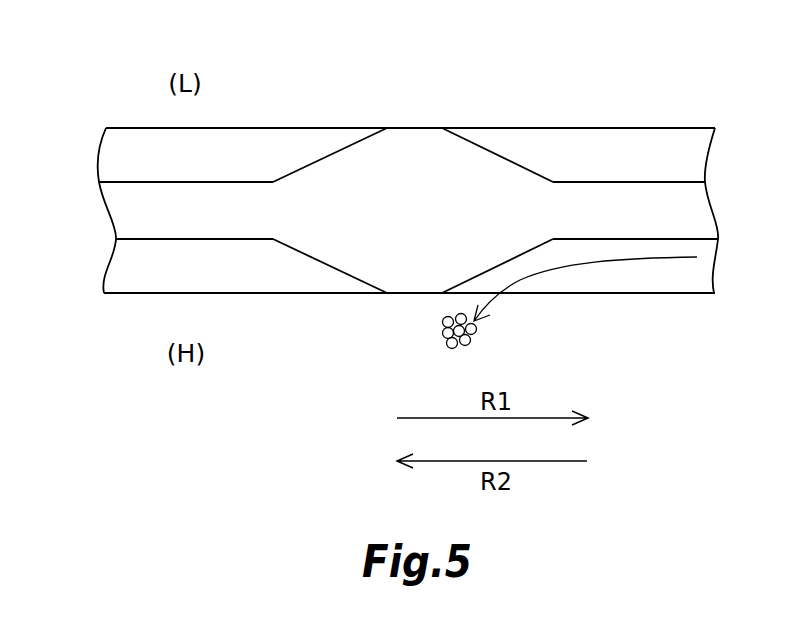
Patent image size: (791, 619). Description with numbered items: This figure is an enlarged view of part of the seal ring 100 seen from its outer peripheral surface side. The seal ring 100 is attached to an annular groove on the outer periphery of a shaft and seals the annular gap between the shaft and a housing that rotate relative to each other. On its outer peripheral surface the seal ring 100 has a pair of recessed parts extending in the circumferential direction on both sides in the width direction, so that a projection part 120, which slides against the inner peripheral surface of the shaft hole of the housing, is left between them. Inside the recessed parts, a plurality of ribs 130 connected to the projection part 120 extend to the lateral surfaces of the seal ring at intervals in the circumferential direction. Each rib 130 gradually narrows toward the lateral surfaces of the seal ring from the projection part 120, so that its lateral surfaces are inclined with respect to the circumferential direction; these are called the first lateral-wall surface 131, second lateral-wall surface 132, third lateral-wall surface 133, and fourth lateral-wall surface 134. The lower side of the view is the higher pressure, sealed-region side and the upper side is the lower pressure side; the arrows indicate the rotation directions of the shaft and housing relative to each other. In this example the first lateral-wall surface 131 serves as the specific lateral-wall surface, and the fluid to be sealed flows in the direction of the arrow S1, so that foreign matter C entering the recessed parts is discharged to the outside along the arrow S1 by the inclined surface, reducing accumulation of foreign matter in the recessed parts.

The seal ring 100 is at (675, 95).
The projection part 120 is at (145, 195).
The ribs 130 is at (540, 140).
The first lateral-wall surface 131 is at (508, 263).
The second lateral-wall surface 132 is at (487, 150).
The third lateral-wall surface 133 is at (315, 262).
The fourth lateral-wall surface 134 is at (348, 152).
The foreign matter C is at (443, 327).
The arrow S1 is at (585, 289).